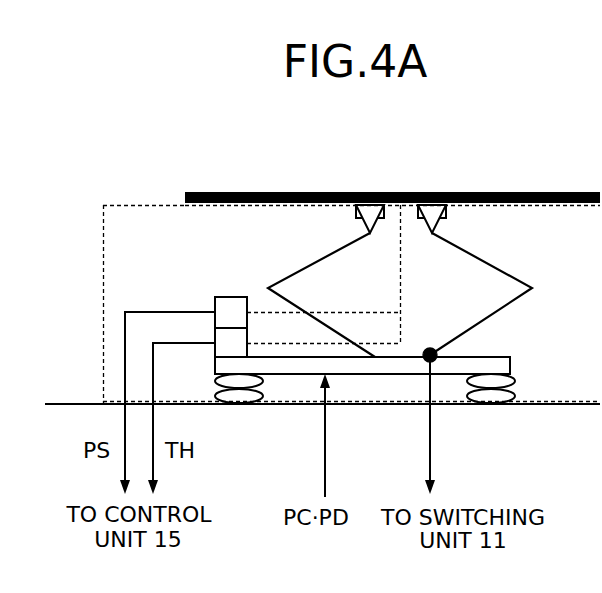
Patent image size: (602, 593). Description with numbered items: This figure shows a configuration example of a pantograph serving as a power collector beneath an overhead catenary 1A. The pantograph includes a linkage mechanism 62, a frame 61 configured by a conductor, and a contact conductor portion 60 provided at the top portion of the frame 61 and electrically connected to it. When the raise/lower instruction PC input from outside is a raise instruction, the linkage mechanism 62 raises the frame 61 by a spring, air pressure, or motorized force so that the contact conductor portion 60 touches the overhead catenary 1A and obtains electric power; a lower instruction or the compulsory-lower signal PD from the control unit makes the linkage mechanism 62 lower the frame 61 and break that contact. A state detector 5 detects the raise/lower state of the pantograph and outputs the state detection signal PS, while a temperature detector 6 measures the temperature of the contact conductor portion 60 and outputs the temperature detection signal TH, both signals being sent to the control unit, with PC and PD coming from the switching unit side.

The overhead catenary 1A is at (546, 191).
The contact conductor portion 60 is at (356, 210).
The frame 61 is at (515, 300).
The linkage mechanism 62 is at (510, 365).
The state detector 5 is at (215, 300).
The temperature detector 6 is at (215, 351).